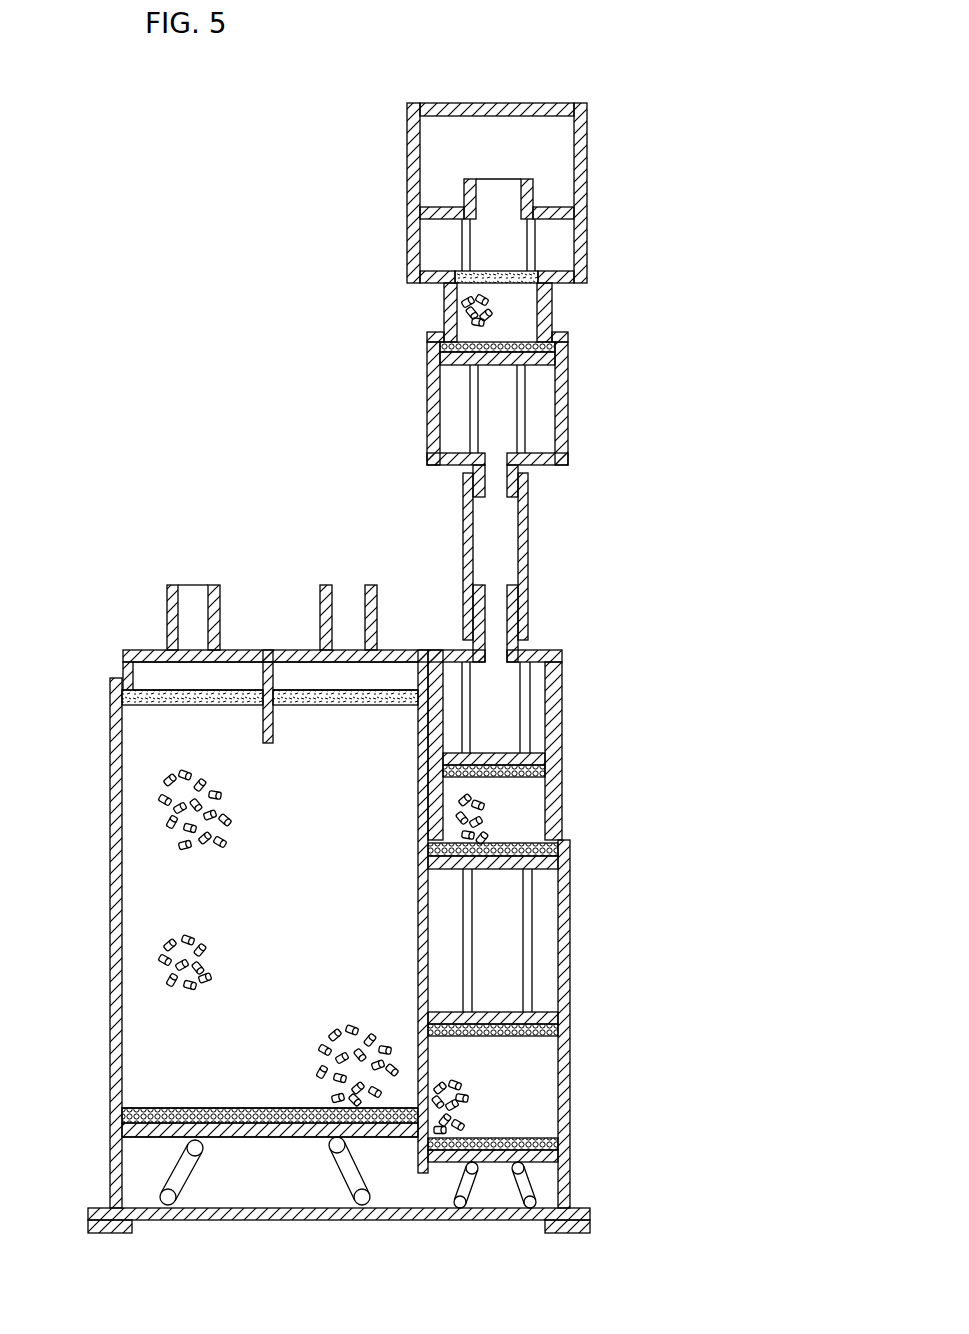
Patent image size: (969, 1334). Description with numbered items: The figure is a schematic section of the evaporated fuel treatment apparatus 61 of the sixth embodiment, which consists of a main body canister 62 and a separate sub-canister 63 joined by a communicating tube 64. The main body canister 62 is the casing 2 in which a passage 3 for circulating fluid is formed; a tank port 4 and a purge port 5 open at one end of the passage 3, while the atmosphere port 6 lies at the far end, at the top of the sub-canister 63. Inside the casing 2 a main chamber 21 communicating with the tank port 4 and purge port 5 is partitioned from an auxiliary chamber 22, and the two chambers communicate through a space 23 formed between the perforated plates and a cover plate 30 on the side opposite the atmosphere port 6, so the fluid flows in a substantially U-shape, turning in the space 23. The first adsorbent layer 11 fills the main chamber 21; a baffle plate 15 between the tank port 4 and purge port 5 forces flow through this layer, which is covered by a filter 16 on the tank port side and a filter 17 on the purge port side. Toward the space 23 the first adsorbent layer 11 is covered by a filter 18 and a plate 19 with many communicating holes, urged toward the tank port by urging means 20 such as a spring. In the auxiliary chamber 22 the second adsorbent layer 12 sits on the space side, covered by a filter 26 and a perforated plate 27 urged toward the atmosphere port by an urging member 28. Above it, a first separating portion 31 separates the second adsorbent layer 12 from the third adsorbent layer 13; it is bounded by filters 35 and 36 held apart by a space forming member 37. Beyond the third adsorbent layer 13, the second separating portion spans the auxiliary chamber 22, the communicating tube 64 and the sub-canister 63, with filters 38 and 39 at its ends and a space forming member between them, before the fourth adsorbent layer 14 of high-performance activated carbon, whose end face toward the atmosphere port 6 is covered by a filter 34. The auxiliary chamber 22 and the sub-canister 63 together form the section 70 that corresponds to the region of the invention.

The casing 2 is at (113, 957).
The passage 3 is at (150, 897).
The tank port 4 is at (190, 602).
The purge port 5 is at (340, 600).
The atmosphere port 6 is at (500, 187).
The first adsorbent layer 11 is at (185, 752).
The second adsorbent layer 12 is at (535, 1102).
The third adsorbent layer 13 is at (528, 806).
The fourth adsorbent layer 14 is at (520, 308).
The baffle plate 15 is at (273, 737).
The filter 16 is at (205, 706).
The filter 17 is at (350, 706).
The filter 18 is at (225, 1107).
The plate 19 is at (270, 1107).
The urging means 20 is at (168, 1212).
The main chamber 21 is at (148, 1077).
The auxiliary chamber 22 is at (512, 886).
The space 23 is at (300, 1190).
The filter 26 is at (553, 1143).
The plate 27 is at (555, 1158).
The urging member 28 is at (520, 1183).
The cover plate 30 is at (405, 1216).
The first separating portion 31 is at (543, 957).
The filter 34 is at (545, 281).
The filter 35 is at (558, 1030).
The filter 36 is at (430, 850).
The space forming member 37 is at (530, 922).
The filter 38 is at (545, 768).
The filter 39 is at (432, 343).
The evaporated fuel treatment apparatus 61 is at (190, 573).
The main body canister 62 is at (105, 658).
The sub-canister 63 is at (445, 103).
The communicating tube 64 is at (524, 547).
The section 70 is at (520, 700).